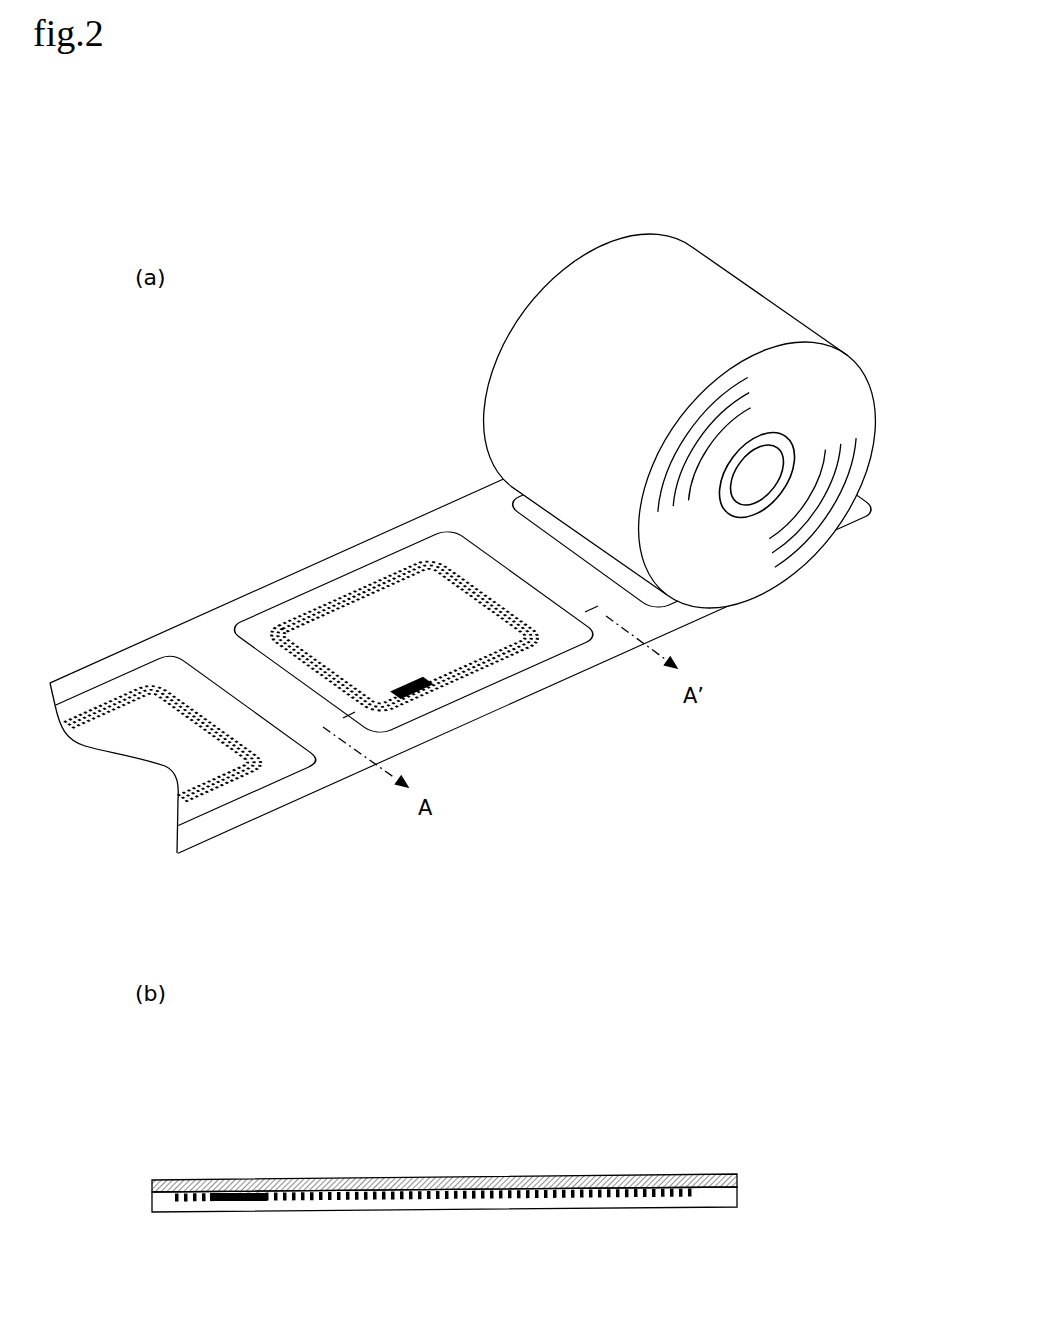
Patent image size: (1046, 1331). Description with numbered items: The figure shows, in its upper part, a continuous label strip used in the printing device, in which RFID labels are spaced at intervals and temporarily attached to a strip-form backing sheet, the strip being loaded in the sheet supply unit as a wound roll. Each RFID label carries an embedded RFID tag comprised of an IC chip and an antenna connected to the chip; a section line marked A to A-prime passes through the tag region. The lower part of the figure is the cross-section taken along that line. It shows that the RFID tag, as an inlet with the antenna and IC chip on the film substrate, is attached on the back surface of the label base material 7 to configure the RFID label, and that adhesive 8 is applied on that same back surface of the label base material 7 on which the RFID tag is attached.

The label base material 7 is at (738, 1177).
The adhesive 8 is at (696, 1207).